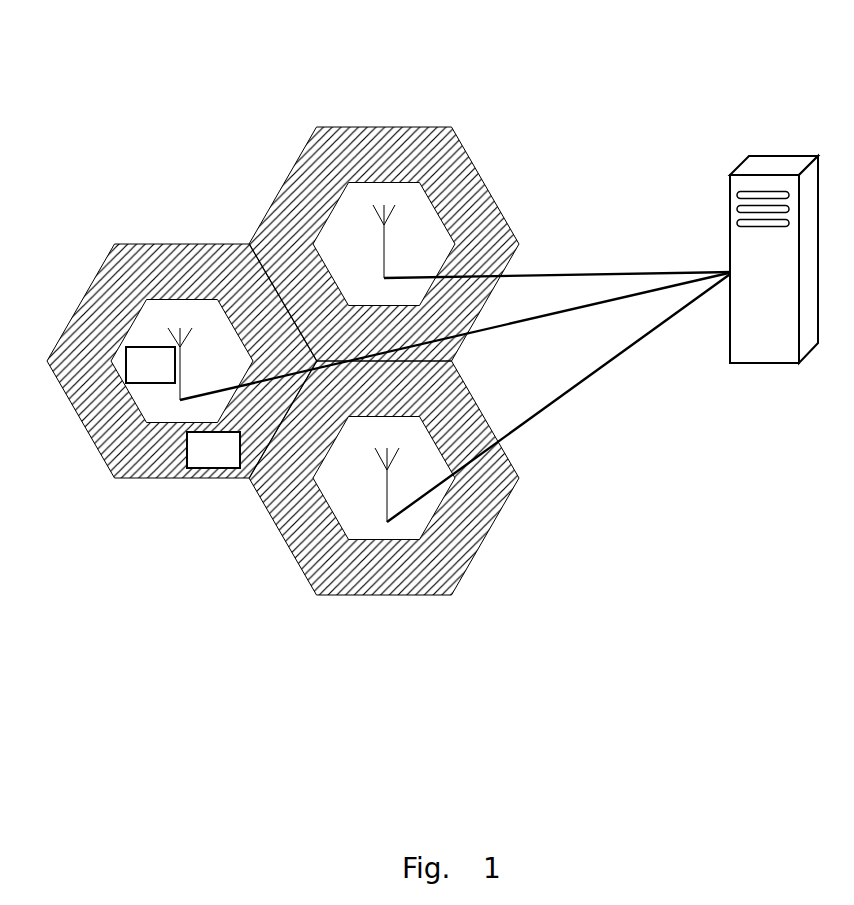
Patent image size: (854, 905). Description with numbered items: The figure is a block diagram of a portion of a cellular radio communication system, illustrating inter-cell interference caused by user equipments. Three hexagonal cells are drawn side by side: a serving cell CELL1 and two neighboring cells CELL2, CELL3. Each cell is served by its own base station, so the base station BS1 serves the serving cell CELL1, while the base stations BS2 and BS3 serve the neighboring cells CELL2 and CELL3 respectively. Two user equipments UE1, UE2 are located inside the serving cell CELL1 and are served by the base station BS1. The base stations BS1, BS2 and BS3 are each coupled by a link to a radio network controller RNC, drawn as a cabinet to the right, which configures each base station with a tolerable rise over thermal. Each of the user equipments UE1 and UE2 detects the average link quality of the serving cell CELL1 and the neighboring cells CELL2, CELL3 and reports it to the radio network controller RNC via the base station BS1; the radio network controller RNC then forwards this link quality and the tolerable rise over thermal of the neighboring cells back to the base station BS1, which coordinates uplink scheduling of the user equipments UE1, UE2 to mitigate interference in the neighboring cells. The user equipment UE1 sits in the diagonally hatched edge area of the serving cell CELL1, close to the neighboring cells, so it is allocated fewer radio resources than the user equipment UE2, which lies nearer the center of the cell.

The serving cell CELL1 is at (187, 245).
The neighboring cell CELL2 is at (400, 127).
The neighboring cell CELL3 is at (283, 533).
The base station BS1 is at (165, 330).
The base station BS2 is at (377, 220).
The base station BS3 is at (380, 492).
The user equipment UE1 is at (213, 450).
The user equipment UE2 is at (150, 365).
The radio network controller RNC is at (730, 205).